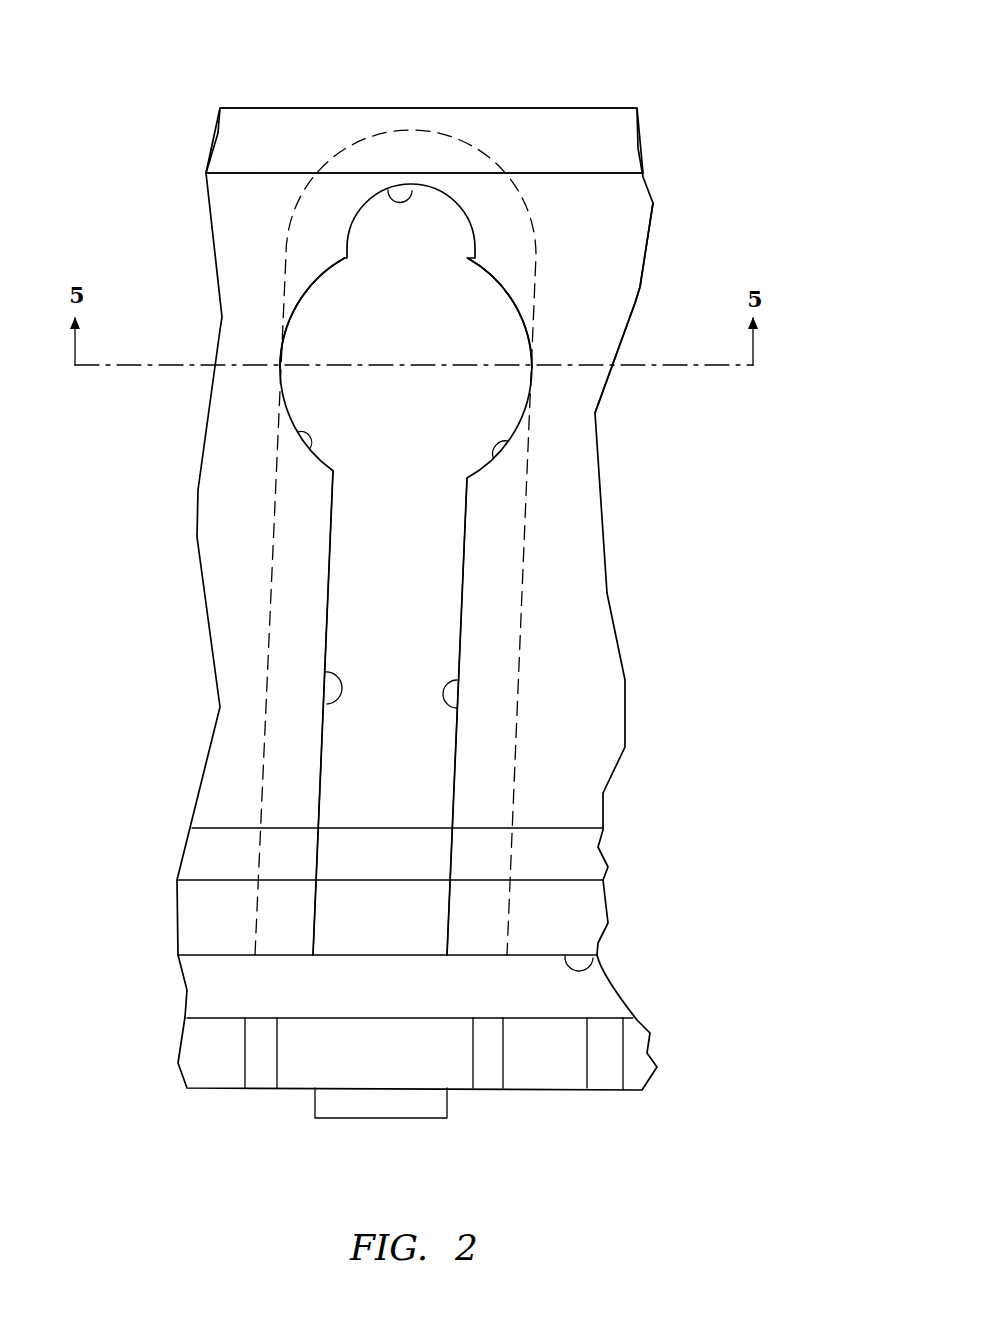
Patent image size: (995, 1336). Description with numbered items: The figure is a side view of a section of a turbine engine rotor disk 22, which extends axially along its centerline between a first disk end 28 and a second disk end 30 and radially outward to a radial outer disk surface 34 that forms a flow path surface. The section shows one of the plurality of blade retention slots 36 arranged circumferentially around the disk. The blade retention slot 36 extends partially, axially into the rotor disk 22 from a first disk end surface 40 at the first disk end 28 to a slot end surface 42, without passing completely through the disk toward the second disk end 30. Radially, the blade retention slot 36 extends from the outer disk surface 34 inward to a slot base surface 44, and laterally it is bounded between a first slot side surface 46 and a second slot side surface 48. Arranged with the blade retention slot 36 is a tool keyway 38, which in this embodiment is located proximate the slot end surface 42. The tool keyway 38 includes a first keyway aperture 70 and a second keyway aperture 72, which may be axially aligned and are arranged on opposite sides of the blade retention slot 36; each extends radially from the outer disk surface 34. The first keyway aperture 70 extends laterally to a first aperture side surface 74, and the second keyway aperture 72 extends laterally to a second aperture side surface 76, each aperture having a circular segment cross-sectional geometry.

The turbine engine rotor disk 22 is at (702, 108).
The first disk end 28 is at (162, 1115).
The second disk end 30 is at (208, 78).
The radial outer disk surface 34 is at (623, 217).
The blade retention slot 36 is at (430, 216).
The tool keyway 38 is at (320, 387).
The first disk end surface 40 is at (597, 964).
The slot end surface 42 is at (386, 190).
The slot base surface 44 is at (435, 757).
The first slot side surface 46 is at (325, 672).
The second slot side surface 48 is at (457, 680).
The first keyway aperture 70 is at (317, 343).
The second keyway aperture 72 is at (504, 343).
The first aperture side surface 74 is at (298, 431).
The second aperture side surface 76 is at (506, 432).